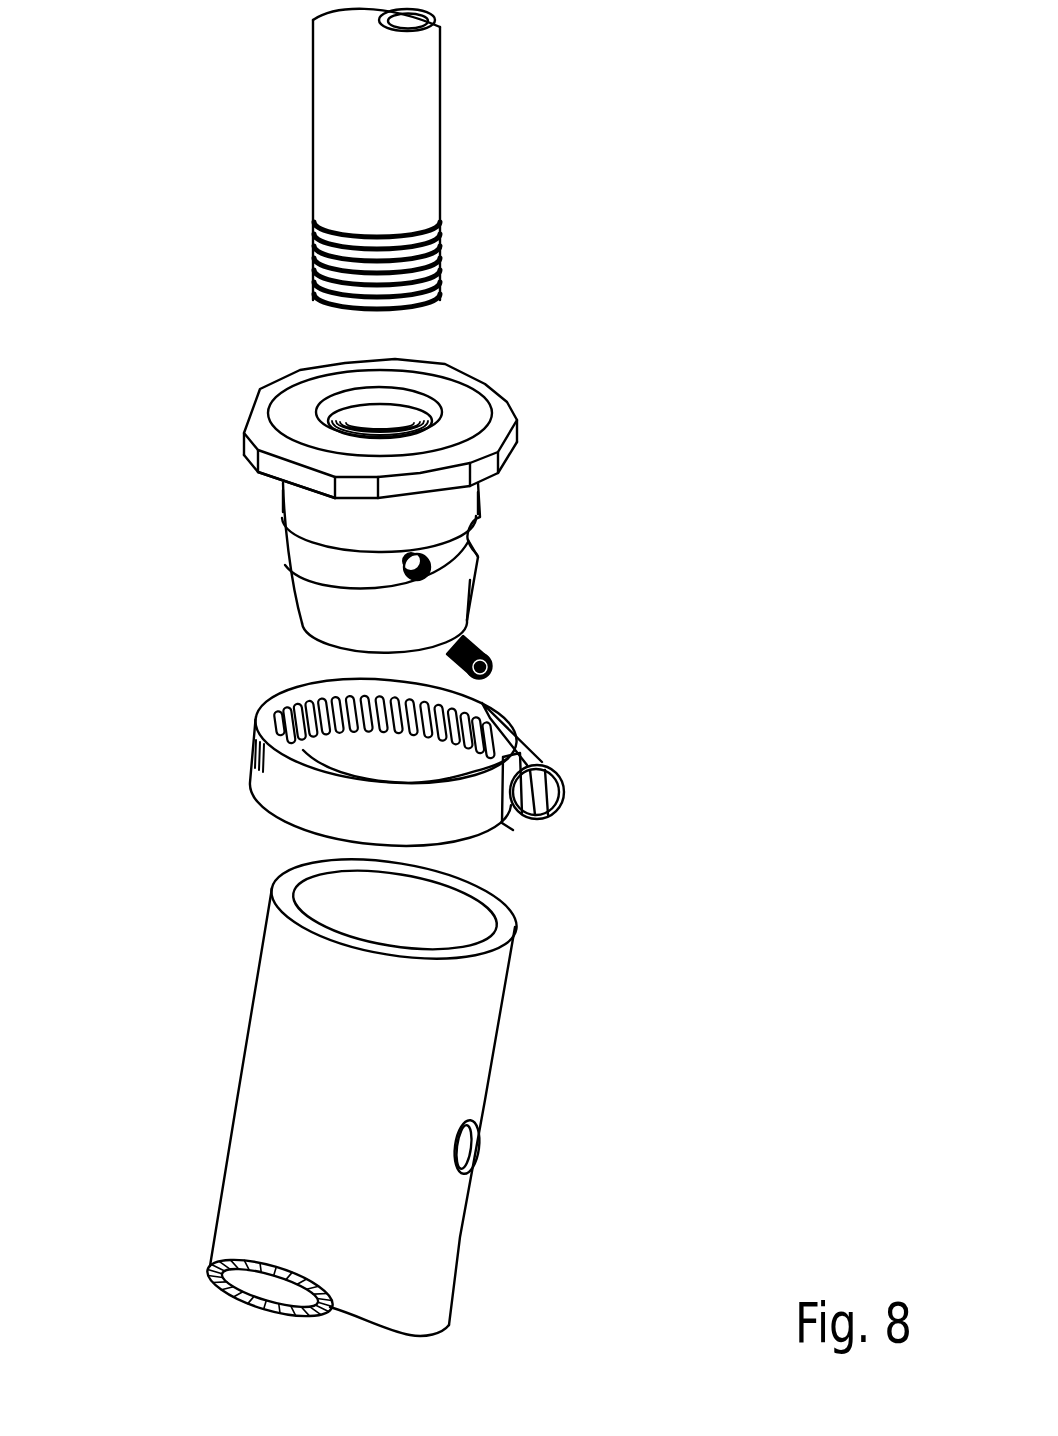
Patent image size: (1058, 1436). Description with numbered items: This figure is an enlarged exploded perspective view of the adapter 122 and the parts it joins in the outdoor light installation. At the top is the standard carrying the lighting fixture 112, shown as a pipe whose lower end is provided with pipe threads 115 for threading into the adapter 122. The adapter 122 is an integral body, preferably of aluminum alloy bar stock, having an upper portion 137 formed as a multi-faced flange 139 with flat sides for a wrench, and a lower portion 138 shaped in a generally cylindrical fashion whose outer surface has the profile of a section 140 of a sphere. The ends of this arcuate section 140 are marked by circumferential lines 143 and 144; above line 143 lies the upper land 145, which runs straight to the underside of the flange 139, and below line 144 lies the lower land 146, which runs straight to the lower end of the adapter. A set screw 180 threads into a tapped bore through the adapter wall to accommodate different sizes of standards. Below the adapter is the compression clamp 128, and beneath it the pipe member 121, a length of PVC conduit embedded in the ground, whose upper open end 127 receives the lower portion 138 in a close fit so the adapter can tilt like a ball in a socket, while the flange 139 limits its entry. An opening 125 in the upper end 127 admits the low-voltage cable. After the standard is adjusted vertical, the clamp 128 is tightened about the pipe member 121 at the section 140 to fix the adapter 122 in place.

The lighting fixture 112 is at (440, 160).
The pipe threads 115 is at (440, 257).
The adapter 122 is at (226, 526).
The upper portion 137 is at (517, 417).
The flange 139 is at (437, 483).
The circumferential line 143 is at (470, 512).
The section of a sphere 140 is at (465, 547).
The circumferential line 144 is at (468, 565).
The lower portion 138 is at (468, 603).
The upper land 145 is at (283, 503).
The lower land 146 is at (295, 606).
The set screw 180 is at (487, 648).
The compression clamp 128 is at (531, 729).
The pipe member 121 is at (408, 1090).
The upper open end 127 is at (457, 1017).
The opening 125 is at (468, 1175).